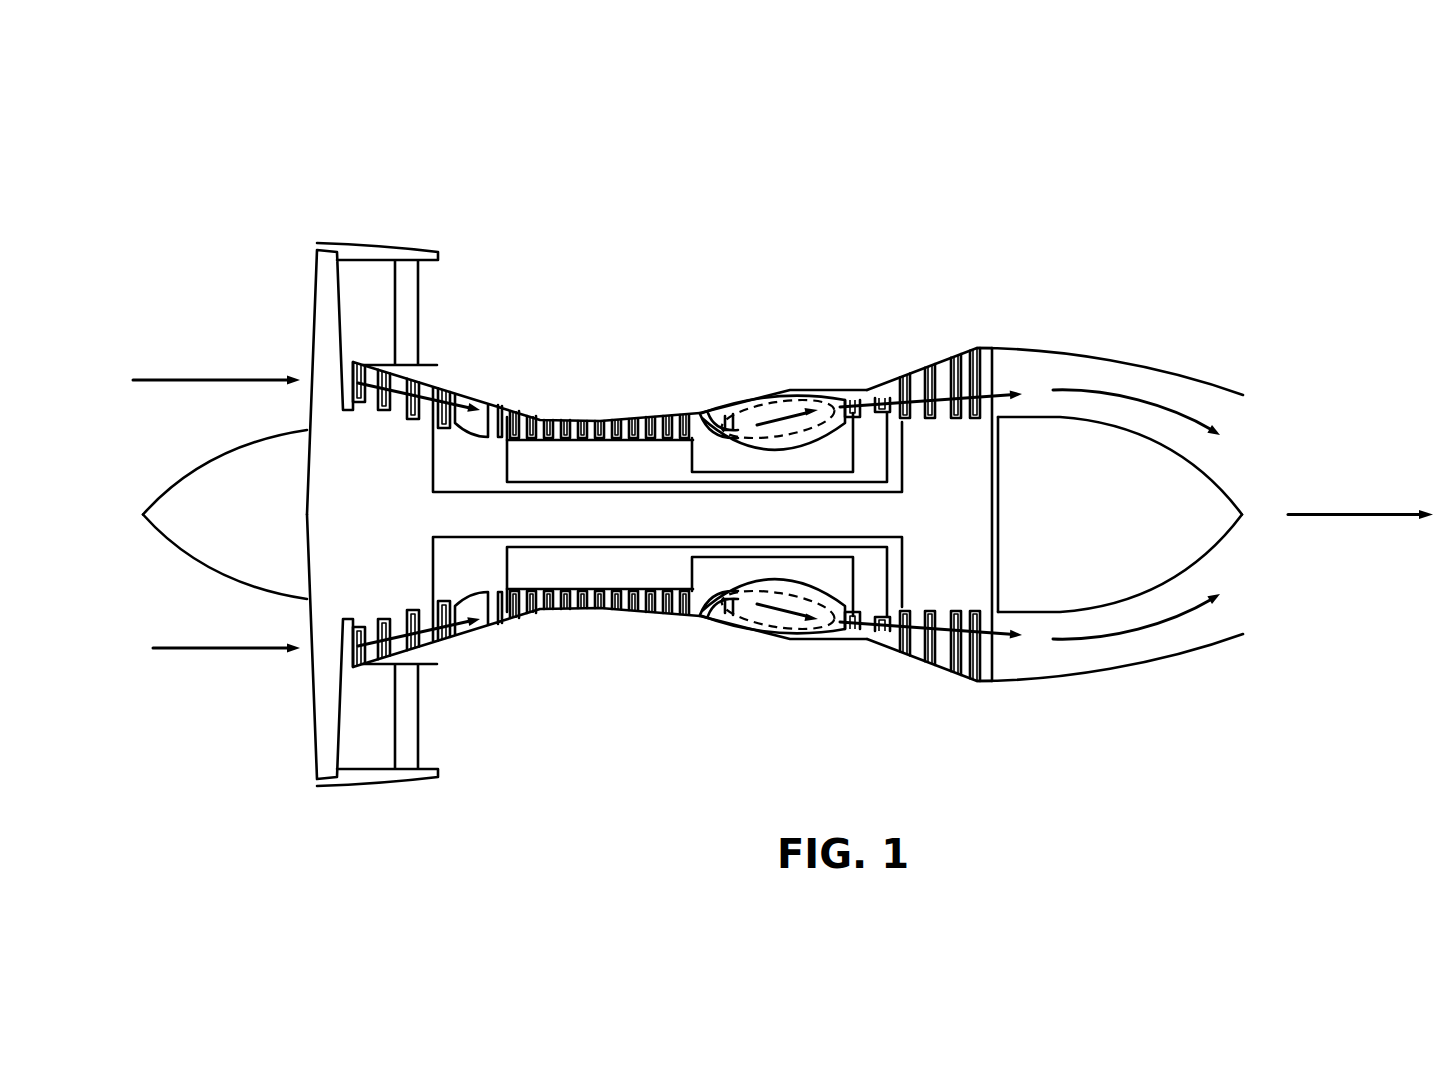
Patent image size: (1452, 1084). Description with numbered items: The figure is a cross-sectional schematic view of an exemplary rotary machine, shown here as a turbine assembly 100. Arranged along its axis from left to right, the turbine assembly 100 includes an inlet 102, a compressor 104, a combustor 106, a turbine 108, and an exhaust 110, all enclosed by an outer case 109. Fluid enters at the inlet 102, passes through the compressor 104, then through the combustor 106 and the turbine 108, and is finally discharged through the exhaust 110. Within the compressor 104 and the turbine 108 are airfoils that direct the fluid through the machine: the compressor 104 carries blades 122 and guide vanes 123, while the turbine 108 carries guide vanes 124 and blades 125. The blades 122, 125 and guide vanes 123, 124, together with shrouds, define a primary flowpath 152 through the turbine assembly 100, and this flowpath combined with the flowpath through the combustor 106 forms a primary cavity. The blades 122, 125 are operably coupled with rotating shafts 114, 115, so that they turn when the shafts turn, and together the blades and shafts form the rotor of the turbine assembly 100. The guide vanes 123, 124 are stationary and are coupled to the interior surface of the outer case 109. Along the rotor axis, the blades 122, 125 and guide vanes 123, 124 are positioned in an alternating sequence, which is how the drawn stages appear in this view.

The turbine assembly 100 is at (340, 178).
The inlet 102 is at (291, 357).
The compressor 104 is at (572, 370).
The combustor 106 is at (760, 370).
The turbine 108 is at (954, 327).
The outer case 109 is at (812, 385).
The exhaust 110 is at (1272, 376).
The rotating shaft 114 is at (608, 450).
The rotating shaft 115 is at (948, 565).
The blade 122 is at (528, 605).
The guide vane 123 is at (545, 605).
The guide vane 124 is at (972, 655).
The blade 125 is at (995, 655).
The primary flowpath 152 is at (458, 405).